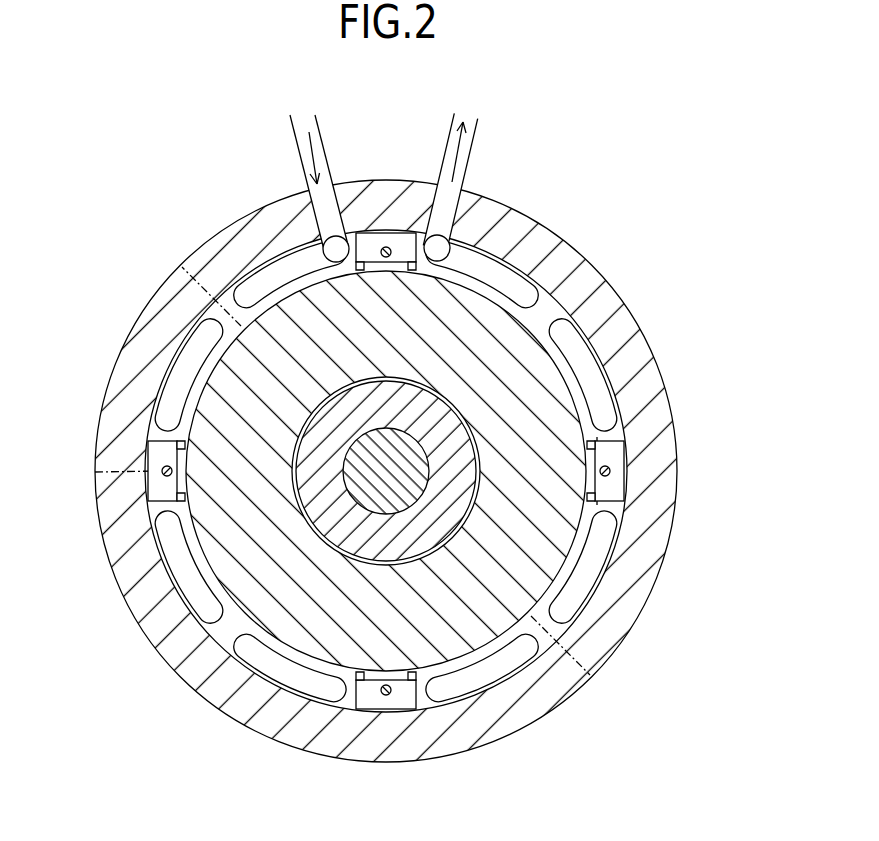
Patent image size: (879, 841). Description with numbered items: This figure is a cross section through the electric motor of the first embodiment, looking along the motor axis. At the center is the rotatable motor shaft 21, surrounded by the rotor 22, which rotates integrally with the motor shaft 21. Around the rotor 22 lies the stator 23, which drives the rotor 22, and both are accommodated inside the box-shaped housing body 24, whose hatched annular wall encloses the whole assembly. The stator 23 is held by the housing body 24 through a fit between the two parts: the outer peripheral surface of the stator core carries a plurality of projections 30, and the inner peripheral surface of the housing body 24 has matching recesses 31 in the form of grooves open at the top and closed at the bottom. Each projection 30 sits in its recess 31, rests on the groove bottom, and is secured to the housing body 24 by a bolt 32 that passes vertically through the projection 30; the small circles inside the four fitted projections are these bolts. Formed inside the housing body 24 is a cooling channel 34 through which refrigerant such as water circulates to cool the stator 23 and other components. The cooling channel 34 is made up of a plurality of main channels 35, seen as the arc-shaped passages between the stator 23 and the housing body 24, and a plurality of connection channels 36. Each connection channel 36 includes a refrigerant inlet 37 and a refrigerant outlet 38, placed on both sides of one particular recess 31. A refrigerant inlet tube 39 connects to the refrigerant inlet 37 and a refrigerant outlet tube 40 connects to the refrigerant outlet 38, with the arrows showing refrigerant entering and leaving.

The motor shaft 21 is at (413, 437).
The rotor 22 is at (452, 510).
The stator 23 is at (518, 704).
The housing body 24 is at (531, 216).
The projection 30 is at (357, 233).
The recess 31 is at (397, 236).
The bolt 32 is at (600, 469).
The cooling channel 34 is at (577, 322).
The main channel 35 is at (597, 386).
The connection channel 36 is at (95, 473).
The refrigerant inlet 37 is at (336, 262).
The refrigerant outlet 38 is at (437, 262).
The refrigerant inlet tube 39 is at (300, 159).
The refrigerant outlet tube 40 is at (476, 155).